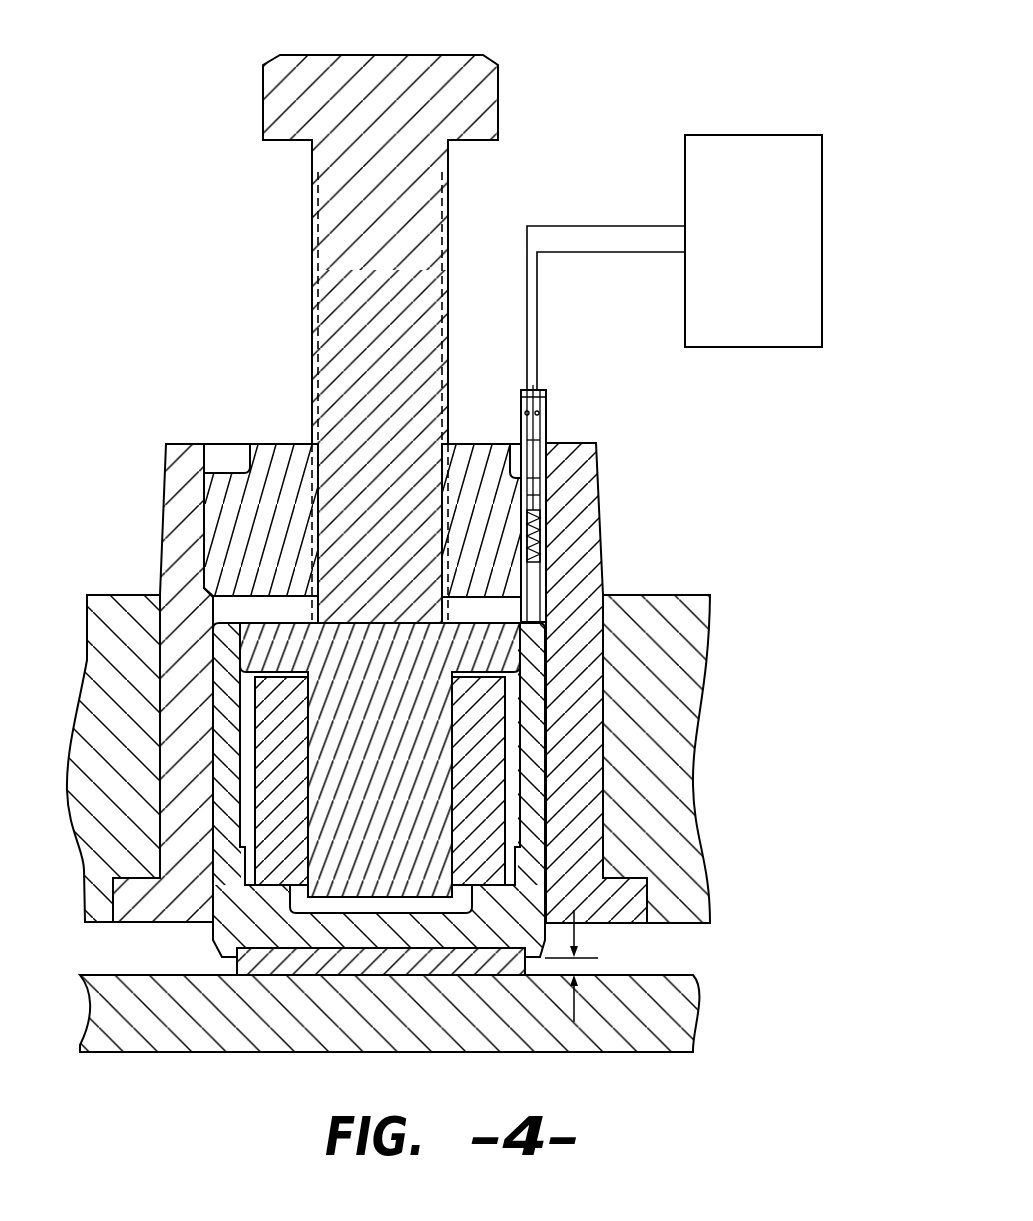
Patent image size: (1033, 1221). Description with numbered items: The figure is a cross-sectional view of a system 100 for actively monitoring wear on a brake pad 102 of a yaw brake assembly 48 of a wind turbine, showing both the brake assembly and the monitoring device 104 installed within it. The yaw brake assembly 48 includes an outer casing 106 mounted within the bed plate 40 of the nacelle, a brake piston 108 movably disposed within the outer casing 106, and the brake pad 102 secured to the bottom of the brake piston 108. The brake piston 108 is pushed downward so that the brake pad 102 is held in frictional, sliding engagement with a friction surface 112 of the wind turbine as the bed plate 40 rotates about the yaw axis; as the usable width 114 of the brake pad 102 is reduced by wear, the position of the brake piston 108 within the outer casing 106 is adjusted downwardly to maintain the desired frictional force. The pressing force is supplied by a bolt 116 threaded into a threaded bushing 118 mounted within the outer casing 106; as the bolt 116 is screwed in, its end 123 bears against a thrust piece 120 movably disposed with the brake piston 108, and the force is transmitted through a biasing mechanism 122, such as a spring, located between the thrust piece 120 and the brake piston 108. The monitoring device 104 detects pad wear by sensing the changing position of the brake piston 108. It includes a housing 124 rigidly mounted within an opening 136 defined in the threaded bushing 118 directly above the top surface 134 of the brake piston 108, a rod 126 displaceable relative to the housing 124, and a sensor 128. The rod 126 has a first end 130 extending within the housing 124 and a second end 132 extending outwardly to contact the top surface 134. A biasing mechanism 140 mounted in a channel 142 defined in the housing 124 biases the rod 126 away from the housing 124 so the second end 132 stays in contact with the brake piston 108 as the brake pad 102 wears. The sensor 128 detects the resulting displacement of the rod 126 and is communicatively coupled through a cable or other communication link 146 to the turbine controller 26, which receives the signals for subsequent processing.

The turbine controller 26 is at (733, 226).
The bed plate 40 is at (680, 667).
The yaw brake assembly 48 is at (184, 297).
The system 100 is at (620, 80).
The brake pad 102 is at (252, 962).
The monitoring device 104 is at (555, 388).
The outer casing 106 is at (180, 510).
The brake piston 108 is at (530, 847).
The friction surface 112 is at (680, 975).
The usable width 114 is at (575, 962).
The bolt 116 is at (342, 208).
The threaded bushing 118 is at (285, 445).
The thrust piece 120 is at (356, 767).
The biasing mechanism 122 is at (478, 750).
The end 123 is at (388, 628).
The housing 124 is at (541, 412).
The rod 126 is at (548, 483).
The sensor 128 is at (535, 378).
The first end 130 is at (540, 452).
The second end 132 is at (548, 565).
The top surface 134 is at (548, 620).
The opening 136 is at (532, 547).
The biasing mechanism 140 is at (535, 512).
The channel 142 is at (548, 498).
The communication link 146 is at (558, 252).